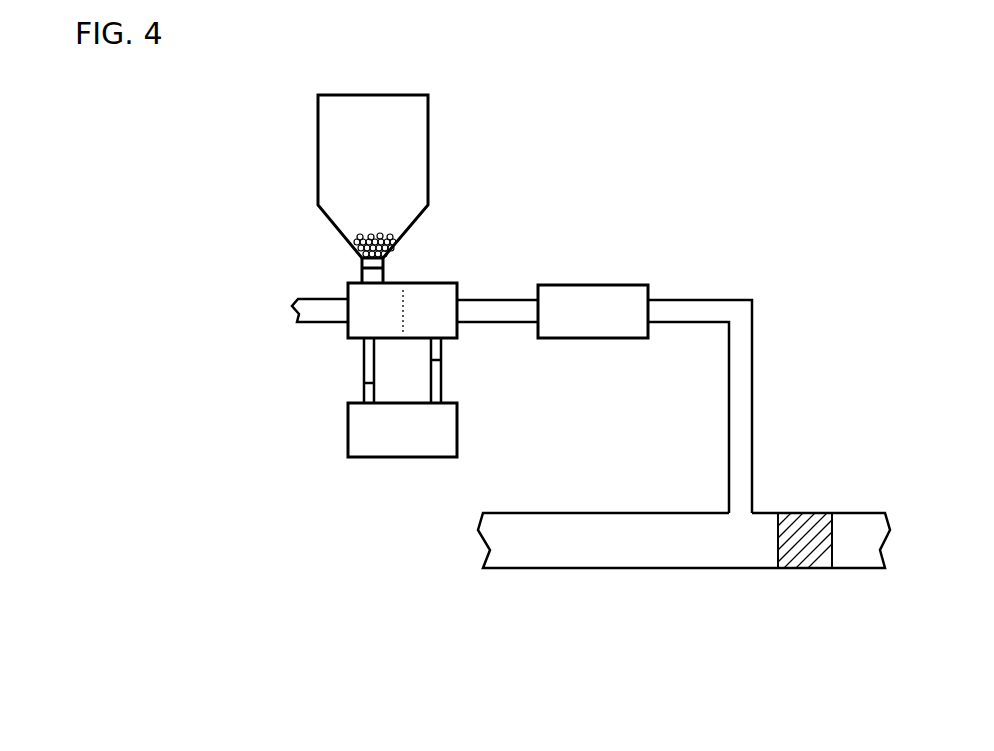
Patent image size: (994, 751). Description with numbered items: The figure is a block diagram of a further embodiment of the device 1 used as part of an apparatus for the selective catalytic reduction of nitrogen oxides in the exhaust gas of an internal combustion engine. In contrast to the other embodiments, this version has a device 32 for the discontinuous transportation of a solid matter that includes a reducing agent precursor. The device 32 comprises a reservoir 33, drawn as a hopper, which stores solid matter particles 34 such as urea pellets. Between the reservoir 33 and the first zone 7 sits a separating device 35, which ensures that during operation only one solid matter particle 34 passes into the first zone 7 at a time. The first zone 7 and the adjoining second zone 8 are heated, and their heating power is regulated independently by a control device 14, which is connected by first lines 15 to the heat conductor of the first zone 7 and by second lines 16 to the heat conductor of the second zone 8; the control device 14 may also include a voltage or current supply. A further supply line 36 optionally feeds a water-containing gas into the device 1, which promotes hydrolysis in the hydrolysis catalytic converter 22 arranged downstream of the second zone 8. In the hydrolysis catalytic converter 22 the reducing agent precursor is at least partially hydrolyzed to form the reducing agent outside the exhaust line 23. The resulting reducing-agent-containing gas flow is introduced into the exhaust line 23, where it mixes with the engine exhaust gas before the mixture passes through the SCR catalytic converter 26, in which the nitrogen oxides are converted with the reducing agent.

The device 1 is at (458, 257).
The first zone 7 is at (348, 330).
The second zone 8 is at (457, 330).
The control device 14 is at (370, 457).
The first lines 15 is at (363, 378).
The second lines 16 is at (441, 360).
The hydrolysis catalytic converter 22 is at (617, 285).
The exhaust line 23 is at (588, 568).
The SCR catalytic converter 26 is at (805, 568).
The device for the discontinuous transportation of a solid matter 32 is at (450, 162).
The reservoir 33 is at (428, 112).
The solid matter particles 34 is at (397, 245).
The separating device 35 is at (360, 262).
The further supply line 36 is at (313, 299).